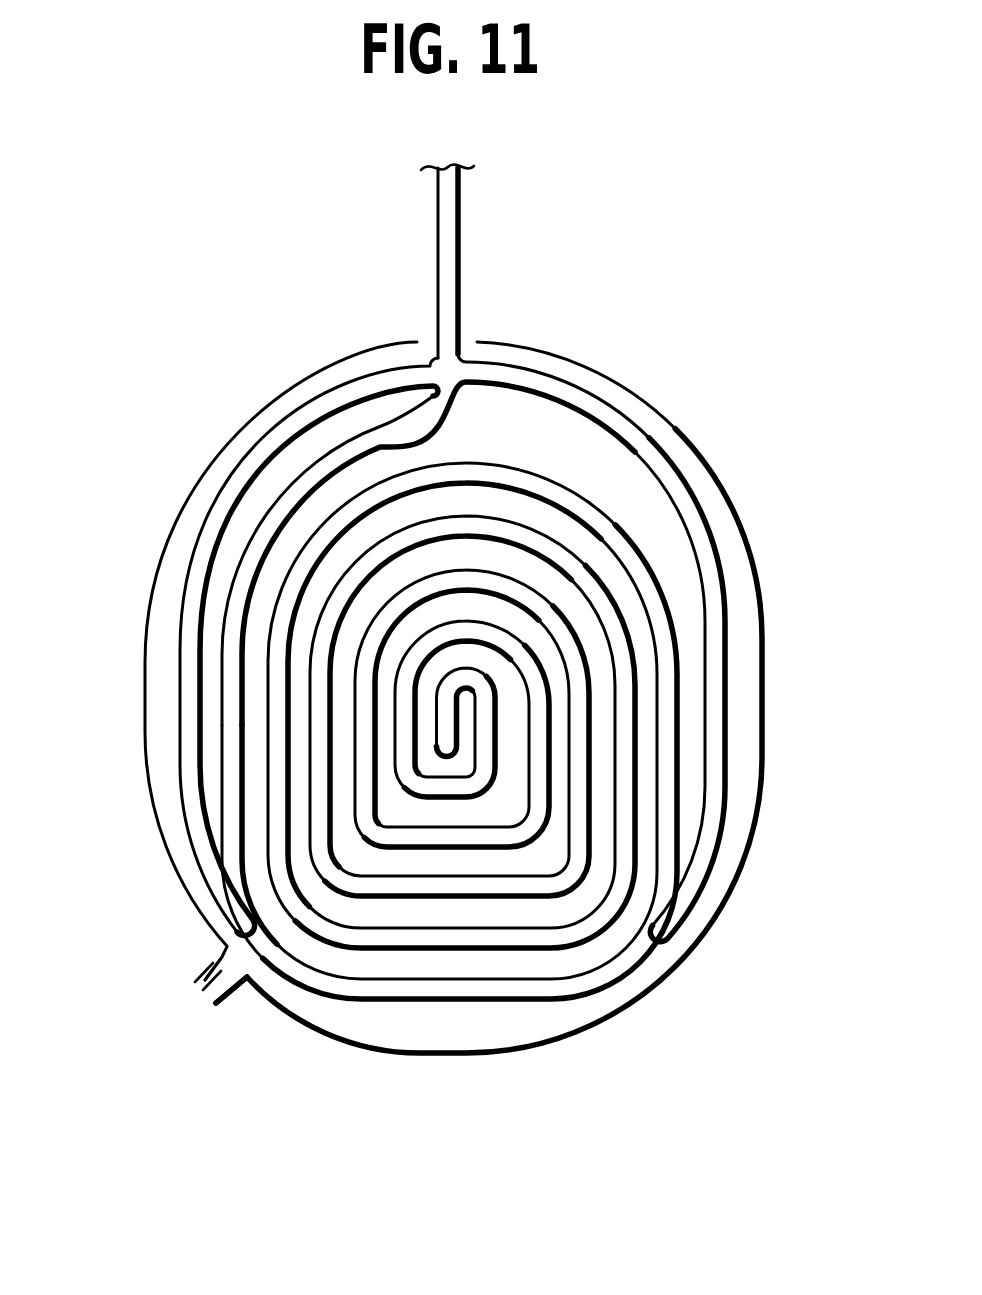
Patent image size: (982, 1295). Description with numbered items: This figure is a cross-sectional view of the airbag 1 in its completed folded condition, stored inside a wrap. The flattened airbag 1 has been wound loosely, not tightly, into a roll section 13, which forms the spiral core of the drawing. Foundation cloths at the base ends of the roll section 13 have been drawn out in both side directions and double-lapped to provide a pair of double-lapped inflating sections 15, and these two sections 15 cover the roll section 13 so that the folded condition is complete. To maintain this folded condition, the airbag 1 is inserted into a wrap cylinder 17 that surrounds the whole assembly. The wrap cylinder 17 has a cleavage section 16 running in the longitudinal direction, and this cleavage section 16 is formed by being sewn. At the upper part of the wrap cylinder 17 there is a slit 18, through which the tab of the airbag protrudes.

The airbag 1 is at (428, 284).
The roll section 13 is at (518, 1000).
The double-lapped inflating sections 15 is at (179, 686).
The cleavage section 16 is at (203, 997).
The wrap cylinder 17 is at (658, 418).
The slit 18 is at (467, 341).